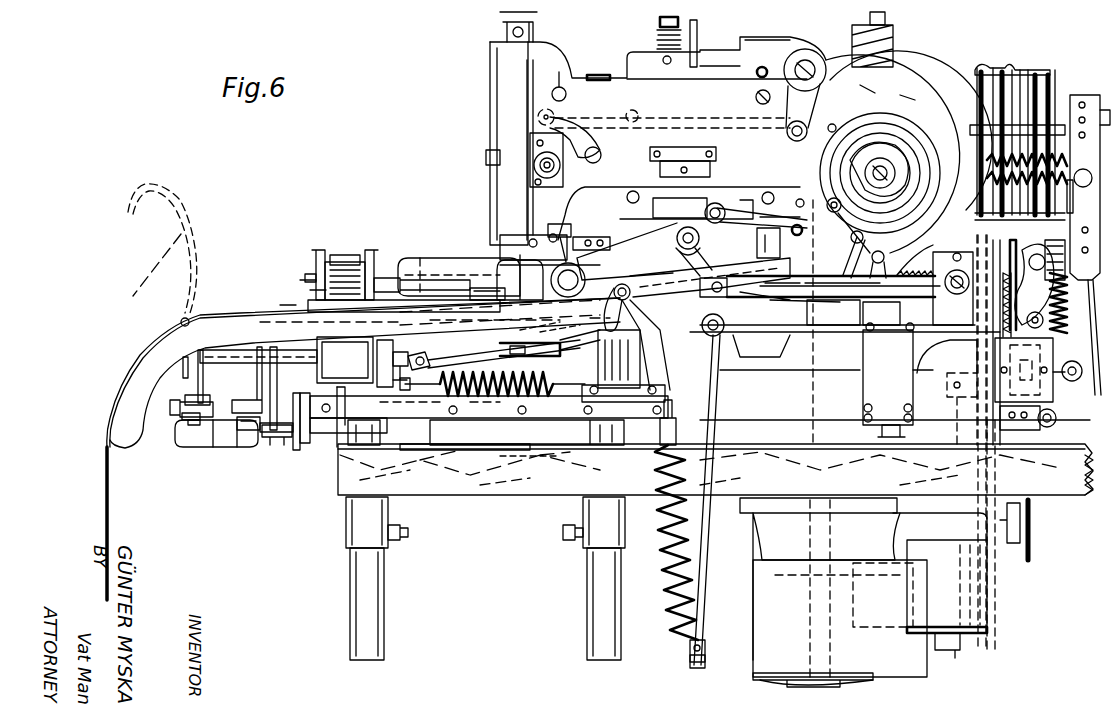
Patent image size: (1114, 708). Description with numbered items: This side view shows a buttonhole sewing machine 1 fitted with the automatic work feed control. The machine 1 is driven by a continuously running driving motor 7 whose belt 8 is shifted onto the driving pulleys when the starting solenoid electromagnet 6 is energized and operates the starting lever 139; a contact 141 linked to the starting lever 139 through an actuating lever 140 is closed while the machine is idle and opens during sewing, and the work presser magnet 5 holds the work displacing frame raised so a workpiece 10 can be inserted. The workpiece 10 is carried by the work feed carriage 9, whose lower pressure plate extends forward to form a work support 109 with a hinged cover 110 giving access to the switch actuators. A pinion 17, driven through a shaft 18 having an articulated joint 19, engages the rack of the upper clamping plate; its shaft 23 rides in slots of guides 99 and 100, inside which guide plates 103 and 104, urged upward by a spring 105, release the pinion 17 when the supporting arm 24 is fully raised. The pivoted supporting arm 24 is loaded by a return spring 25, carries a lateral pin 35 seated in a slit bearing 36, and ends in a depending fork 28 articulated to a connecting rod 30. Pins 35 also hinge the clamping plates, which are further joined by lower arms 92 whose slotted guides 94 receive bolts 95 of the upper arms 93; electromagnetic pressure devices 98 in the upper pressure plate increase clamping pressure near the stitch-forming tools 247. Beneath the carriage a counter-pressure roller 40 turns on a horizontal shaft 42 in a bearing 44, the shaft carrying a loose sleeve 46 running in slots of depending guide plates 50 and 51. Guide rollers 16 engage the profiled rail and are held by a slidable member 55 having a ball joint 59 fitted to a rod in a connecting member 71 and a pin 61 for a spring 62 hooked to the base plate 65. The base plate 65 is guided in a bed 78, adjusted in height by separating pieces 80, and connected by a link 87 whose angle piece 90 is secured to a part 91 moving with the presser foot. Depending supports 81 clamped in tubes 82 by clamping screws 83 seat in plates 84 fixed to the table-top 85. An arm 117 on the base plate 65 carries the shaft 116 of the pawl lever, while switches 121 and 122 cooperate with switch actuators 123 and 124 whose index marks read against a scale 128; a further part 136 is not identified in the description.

The sewing machine 1 is at (631, 100).
The belt 8 is at (1003, 73).
The starting lever 139 is at (1088, 150).
The work support 109 is at (207, 314).
The work feed carriage 9 is at (288, 297).
The hinged cover 110 is at (142, 340).
The guide 99 is at (320, 248).
The pinion 17 is at (348, 254).
The guide 100 is at (374, 250).
The shaft 23 is at (306, 275).
The guide plate 103 is at (308, 280).
The spring 105 is at (312, 290).
The guide plate 104 is at (372, 286).
The supporting arm 24 is at (470, 258).
The stitch-forming tools 247 is at (503, 262).
The electromagnetic pressure device 98 is at (487, 294).
The pin 35 is at (570, 262).
The link 87 is at (642, 262).
The angle piece 90 is at (679, 228).
The part moving with presser foot 91 is at (710, 226).
The upper arm 93 is at (545, 312).
The bolt 95 is at (630, 292).
The articulated joint 19 is at (700, 283).
The guide 94 is at (638, 312).
The lower arm 92 is at (578, 332).
The slit bearing 36 is at (642, 350).
The fork 28 is at (708, 336).
The shaft 136 is at (735, 298).
The shaft 18 is at (940, 292).
The connecting rod 30 is at (712, 407).
The actuating lever 140 is at (1070, 378).
The contact 141 is at (1042, 418).
The horizontal shaft 42 is at (178, 370).
The sleeve 46 is at (225, 358).
The bearing 44 is at (317, 382).
The guide plate 51 is at (203, 386).
The scale 128 is at (183, 402).
The guide plate 50 is at (257, 392).
The switch actuator 123 is at (182, 416).
The switch actuator 124 is at (188, 423).
The switch 121 is at (180, 432).
The switch 122 is at (200, 414).
The arm 117 is at (294, 417).
The shaft 116 is at (276, 438).
The base plate 65 is at (306, 432).
The counter-pressure roller 40 is at (340, 397).
The guide roller 16 is at (420, 360).
The slidable member 55 is at (425, 355).
The ball joint 59 is at (470, 360).
The connecting member 71 is at (533, 351).
The spring 62 is at (540, 386).
The pin 61 is at (445, 404).
The bed 78 is at (428, 410).
The separating piece 80 is at (355, 447).
The plate 84 is at (480, 495).
The table-top 85 is at (530, 470).
The tube 82 is at (390, 517).
The clamping screw 83 is at (400, 540).
The depending support 81 is at (385, 605).
The return spring 25 is at (672, 556).
The driving motor 7 is at (938, 652).
The work presser magnet 5 is at (753, 670).
The starting solenoid electromagnet 6 is at (990, 628).
The workpiece 10 is at (110, 493).